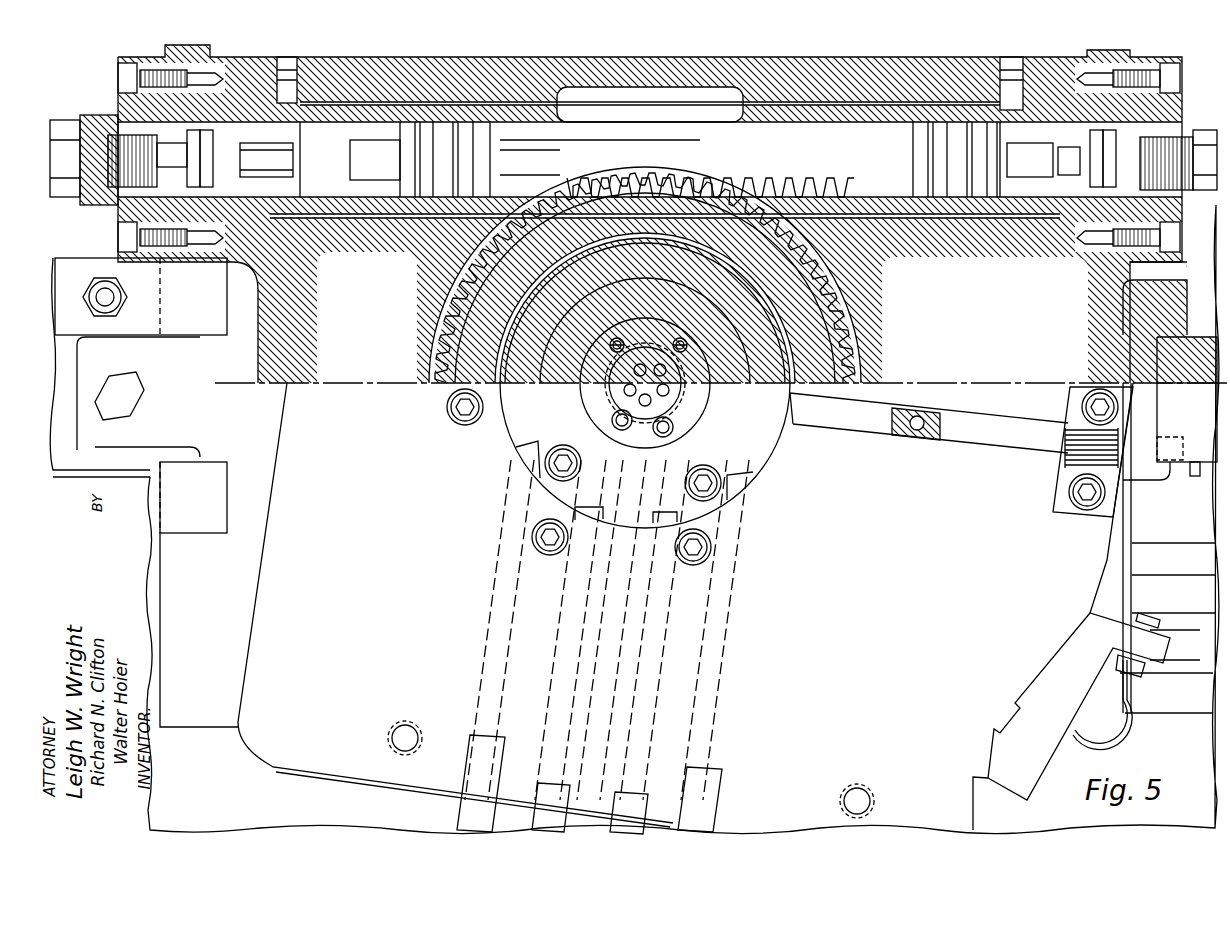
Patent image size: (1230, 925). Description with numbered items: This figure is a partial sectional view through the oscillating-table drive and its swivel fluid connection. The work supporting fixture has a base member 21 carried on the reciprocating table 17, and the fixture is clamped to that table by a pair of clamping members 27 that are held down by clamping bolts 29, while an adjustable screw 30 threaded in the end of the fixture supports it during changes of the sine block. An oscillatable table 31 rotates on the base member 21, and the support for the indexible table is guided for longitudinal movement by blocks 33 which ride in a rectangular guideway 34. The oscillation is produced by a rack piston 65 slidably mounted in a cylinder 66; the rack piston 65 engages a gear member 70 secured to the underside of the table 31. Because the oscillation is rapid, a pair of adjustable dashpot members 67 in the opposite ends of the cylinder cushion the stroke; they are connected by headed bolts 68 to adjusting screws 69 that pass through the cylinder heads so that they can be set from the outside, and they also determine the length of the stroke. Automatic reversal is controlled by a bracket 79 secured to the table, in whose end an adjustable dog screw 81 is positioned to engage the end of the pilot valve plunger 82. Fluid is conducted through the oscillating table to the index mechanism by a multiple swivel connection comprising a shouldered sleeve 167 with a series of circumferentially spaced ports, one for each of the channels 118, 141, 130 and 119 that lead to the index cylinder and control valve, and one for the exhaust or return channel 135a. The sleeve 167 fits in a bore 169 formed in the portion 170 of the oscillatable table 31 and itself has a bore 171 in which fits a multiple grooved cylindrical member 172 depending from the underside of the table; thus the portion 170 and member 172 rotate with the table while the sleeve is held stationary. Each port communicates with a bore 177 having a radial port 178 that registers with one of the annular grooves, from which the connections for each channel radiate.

The table 17 is at (1165, 530).
The base member 21 is at (1115, 545).
The clamping members 27 is at (205, 335).
The clamping bolts 29 is at (118, 312).
The adjustable screw 30 is at (128, 405).
The oscillatable table 31 is at (300, 577).
The blocks 33 is at (890, 432).
The rectangular guideway 34 is at (925, 435).
The rack piston 65 is at (660, 145).
The cylinder 66 is at (300, 152).
The dashpot members 67 is at (300, 185).
The headed bolts 68 is at (128, 130).
The adjusting screws 69 is at (130, 160).
The gear member 70 is at (850, 298).
The bracket 79 is at (1060, 705).
The adjustable dog screw 81 is at (1150, 615).
The pilot valve plunger 82 is at (1195, 478).
The channel 118 is at (495, 640).
The channel 119 is at (715, 697).
The channel 130 is at (648, 648).
The exhaust or return channel 135a is at (605, 672).
The channel 141 is at (575, 608).
The shouldered sleeve 167 is at (688, 395).
The bore 169 is at (560, 375).
The portion of the oscillatable table 170 is at (500, 430).
The bore 171 is at (605, 415).
The multiple grooved cylindrical member 172 is at (675, 428).
The bore 177 is at (610, 345).
The radial port 178 is at (612, 350).